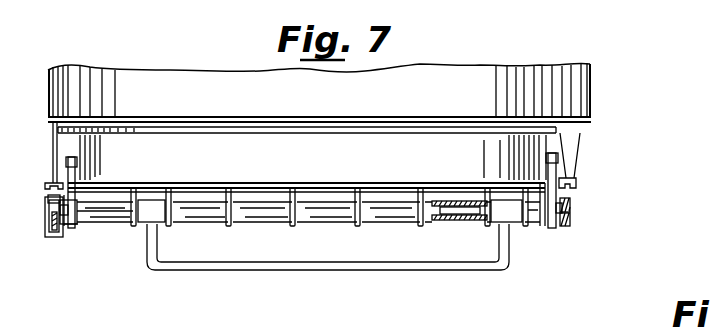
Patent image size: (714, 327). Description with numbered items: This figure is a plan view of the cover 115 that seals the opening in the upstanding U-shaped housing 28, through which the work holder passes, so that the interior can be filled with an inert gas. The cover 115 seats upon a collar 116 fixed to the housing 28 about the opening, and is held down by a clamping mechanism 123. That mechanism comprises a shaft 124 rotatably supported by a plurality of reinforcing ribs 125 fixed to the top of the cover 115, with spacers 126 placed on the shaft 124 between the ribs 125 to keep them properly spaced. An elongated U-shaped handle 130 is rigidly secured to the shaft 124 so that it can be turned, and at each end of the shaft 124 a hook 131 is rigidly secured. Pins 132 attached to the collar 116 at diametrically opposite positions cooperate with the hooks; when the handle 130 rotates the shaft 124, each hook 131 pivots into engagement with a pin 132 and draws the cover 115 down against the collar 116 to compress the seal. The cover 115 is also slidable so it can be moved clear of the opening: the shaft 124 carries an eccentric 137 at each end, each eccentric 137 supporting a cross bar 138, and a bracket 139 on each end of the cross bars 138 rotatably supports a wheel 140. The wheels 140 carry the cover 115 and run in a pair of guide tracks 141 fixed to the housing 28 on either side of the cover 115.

The housing 28 is at (573, 93).
The collar 116 is at (350, 140).
The guide tracks 141 is at (44, 186).
The pins 132 is at (75, 170).
The clamping mechanism 123 is at (520, 238).
The spacers 126 is at (211, 210).
The reinforcing ribs 125 is at (357, 227).
The handle 130 is at (405, 262).
The shaft 124 is at (455, 208).
The cover 115 is at (113, 192).
The hook 131 is at (72, 223).
The eccentric 137 is at (571, 205).
The wheel 140 is at (571, 222).
The bracket 139 is at (43, 230).
The cross bar 138 is at (55, 235).